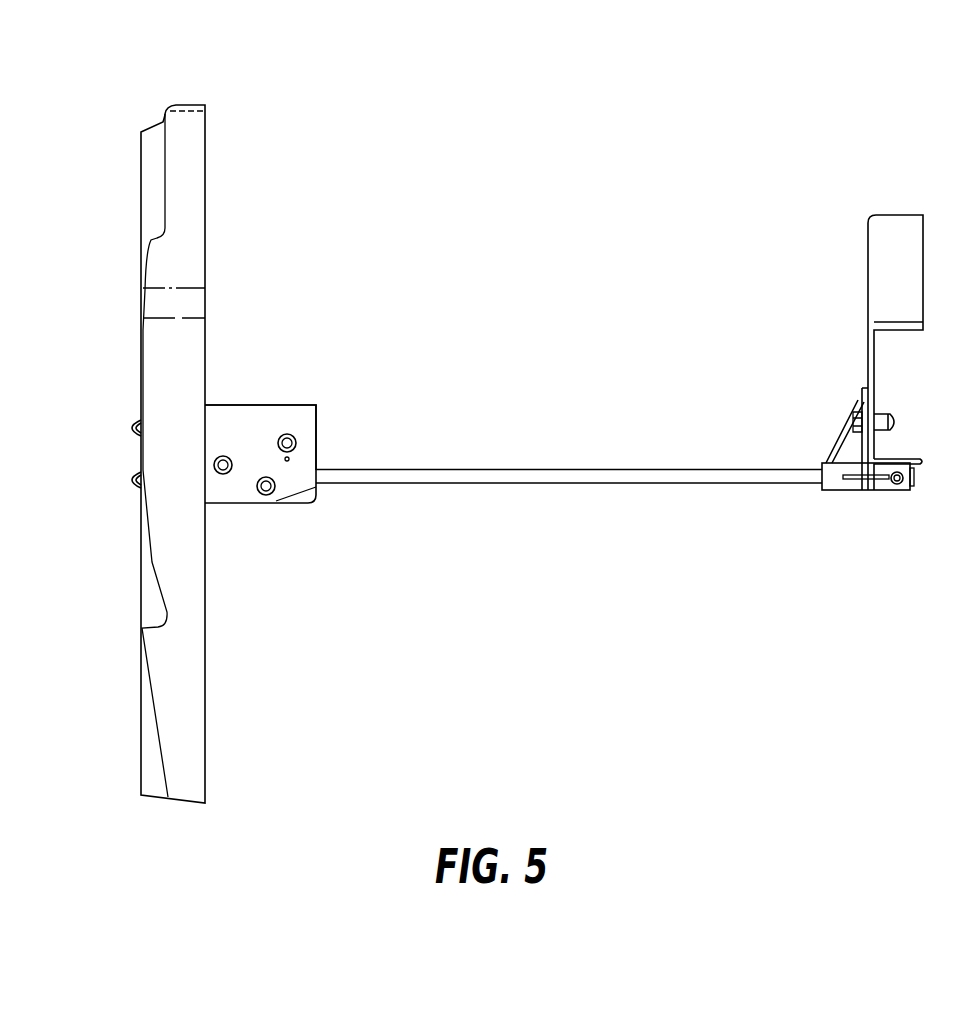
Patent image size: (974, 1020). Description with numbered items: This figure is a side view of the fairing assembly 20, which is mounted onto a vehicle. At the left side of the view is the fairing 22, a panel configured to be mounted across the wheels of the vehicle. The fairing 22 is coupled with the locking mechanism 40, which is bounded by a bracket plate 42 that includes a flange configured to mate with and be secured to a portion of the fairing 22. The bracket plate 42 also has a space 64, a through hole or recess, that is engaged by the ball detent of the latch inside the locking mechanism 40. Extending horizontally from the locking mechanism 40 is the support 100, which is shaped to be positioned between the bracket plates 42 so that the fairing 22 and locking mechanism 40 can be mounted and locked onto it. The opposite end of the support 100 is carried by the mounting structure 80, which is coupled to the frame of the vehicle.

The fairing assembly 20 is at (535, 218).
The fairing 22 is at (187, 103).
The locking mechanism 40 is at (299, 476).
The bracket plate 42 is at (297, 415).
The space 64 is at (296, 459).
The mounting structure 80 is at (843, 491).
The support 100 is at (555, 485).